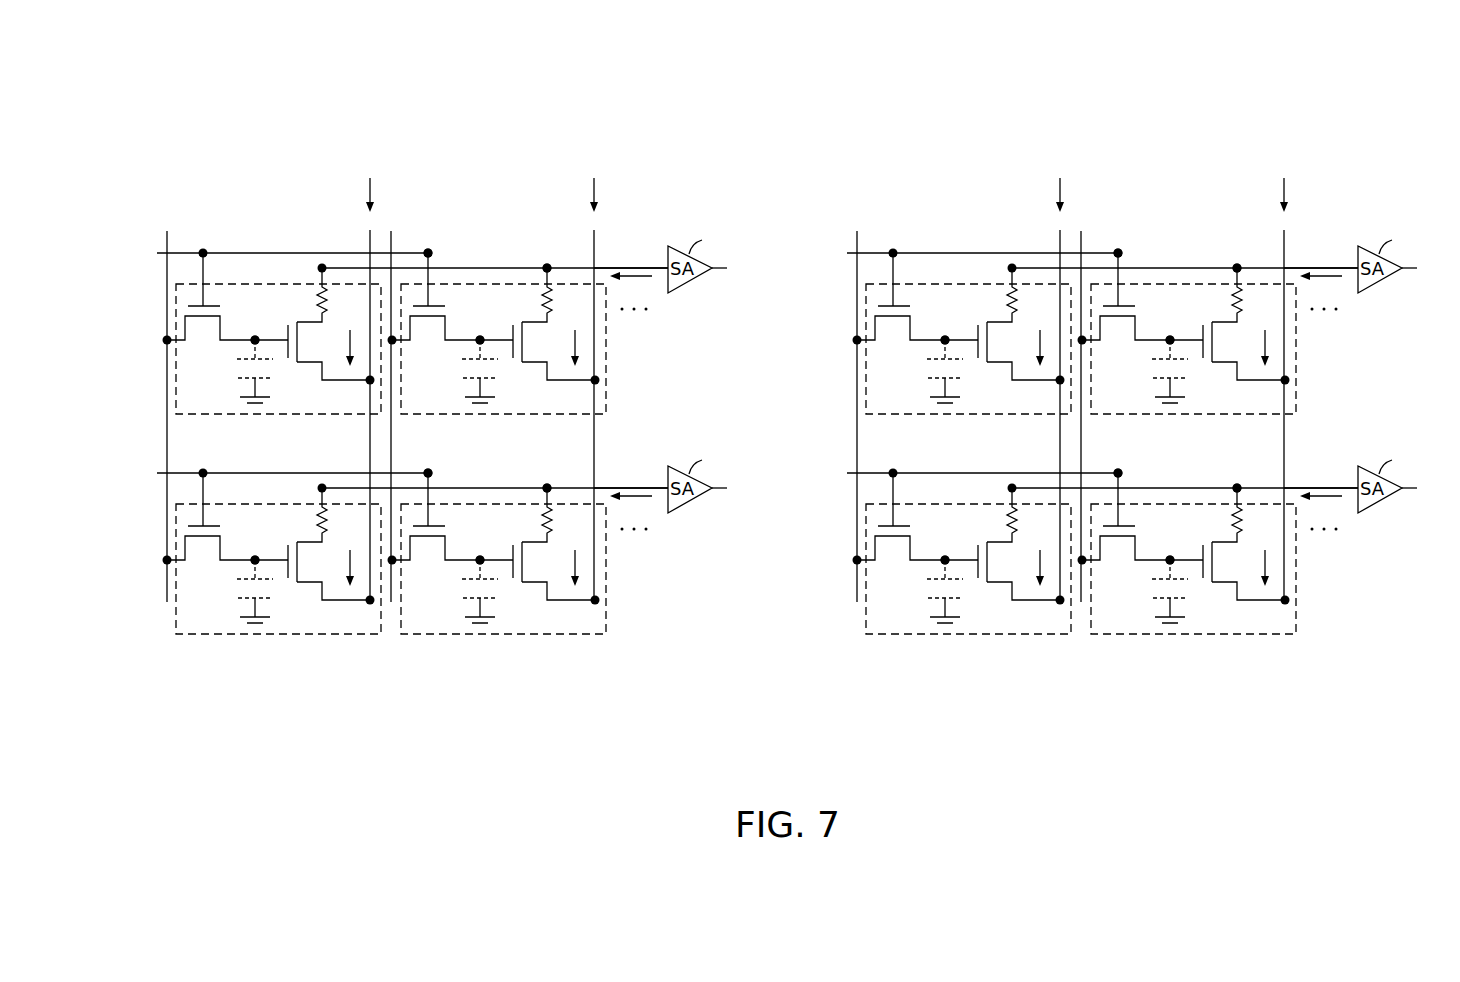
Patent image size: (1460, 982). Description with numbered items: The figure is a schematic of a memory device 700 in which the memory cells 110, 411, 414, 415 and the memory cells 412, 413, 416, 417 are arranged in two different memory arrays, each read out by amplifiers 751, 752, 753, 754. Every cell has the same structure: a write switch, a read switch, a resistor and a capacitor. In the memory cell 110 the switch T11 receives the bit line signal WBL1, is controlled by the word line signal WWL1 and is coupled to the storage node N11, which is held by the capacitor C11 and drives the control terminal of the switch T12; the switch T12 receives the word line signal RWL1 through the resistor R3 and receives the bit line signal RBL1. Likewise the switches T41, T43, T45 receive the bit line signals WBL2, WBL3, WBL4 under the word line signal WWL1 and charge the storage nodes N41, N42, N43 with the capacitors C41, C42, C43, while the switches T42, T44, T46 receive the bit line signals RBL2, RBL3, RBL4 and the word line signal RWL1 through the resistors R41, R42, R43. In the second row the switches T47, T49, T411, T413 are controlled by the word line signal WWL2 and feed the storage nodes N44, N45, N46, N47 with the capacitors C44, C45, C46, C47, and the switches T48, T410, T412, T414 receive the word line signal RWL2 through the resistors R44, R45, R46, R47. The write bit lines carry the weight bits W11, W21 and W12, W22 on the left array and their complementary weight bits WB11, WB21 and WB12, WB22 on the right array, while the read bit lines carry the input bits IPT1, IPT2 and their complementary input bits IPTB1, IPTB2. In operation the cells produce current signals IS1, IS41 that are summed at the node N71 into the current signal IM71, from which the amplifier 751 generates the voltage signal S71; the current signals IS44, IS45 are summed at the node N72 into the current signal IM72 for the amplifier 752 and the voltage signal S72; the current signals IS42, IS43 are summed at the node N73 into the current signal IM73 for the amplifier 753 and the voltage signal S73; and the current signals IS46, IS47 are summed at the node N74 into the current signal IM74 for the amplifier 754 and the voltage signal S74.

The memory device 700 is at (140, 62).
The memory cell 110 is at (278, 363).
The memory cell 411 is at (503, 363).
The memory cell 412 is at (968, 363).
The memory cell 413 is at (1193, 363).
The memory cell 414 is at (278, 583).
The memory cell 415 is at (503, 583).
The memory cell 416 is at (968, 583).
The memory cell 417 is at (1193, 583).
The amplifier 751 is at (704, 258).
The amplifier 752 is at (704, 478).
The amplifier 753 is at (1394, 258).
The amplifier 754 is at (1394, 478).
The bit line signal WBL1 is at (162, 404).
The bit line signal WBL2 is at (411, 404).
The bit line signal WBL3 is at (852, 404).
The bit line signal WBL4 is at (1101, 404).
The bit line signal RBL1 is at (327, 410).
The bit line signal RBL2 is at (551, 410).
The bit line signal RBL3 is at (1017, 410).
The bit line signal RBL4 is at (1241, 410).
The word line signal WWL1 is at (602, 252).
The word line signal WWL2 is at (602, 472).
The word line signal RWL1 is at (976, 252).
The word line signal RWL2 is at (976, 472).
The input bit IPT1 is at (365, 179).
The input bit IPT2 is at (590, 179).
The input bit IPTB1 is at (1060, 179).
The input bit IPTB2 is at (1285, 179).
The node N71 is at (495, 258).
The node N72 is at (495, 478).
The node N73 is at (1185, 258).
The node N74 is at (1185, 478).
The voltage signal S71 is at (740, 267).
The voltage signal S72 is at (740, 487).
The voltage signal S73 is at (1430, 267).
The voltage signal S74 is at (1430, 487).
The current signal IM71 is at (635, 291).
The current signal IM72 is at (635, 511).
The current signal IM73 is at (1325, 291).
The current signal IM74 is at (1325, 511).
The switch T11 is at (226, 306).
The switch T41 is at (451, 306).
The switch T43 is at (916, 306).
The switch T45 is at (1141, 306).
The switch T47 is at (226, 526).
The switch T49 is at (451, 526).
The switch T411 is at (916, 526).
The switch T413 is at (1141, 526).
The switch T12 is at (331, 350).
The switch T42 is at (556, 350).
The switch T44 is at (1021, 350).
The switch T46 is at (1246, 350).
The switch T48 is at (331, 570).
The switch T410 is at (556, 570).
The switch T412 is at (1021, 570).
The switch T414 is at (1246, 570).
The weight bit W11 is at (254, 328).
The weight bit W12 is at (479, 328).
The weight bit W21 is at (254, 548).
The weight bit W22 is at (479, 548).
The weight bit WB11 is at (947, 328).
The weight bit WB12 is at (1172, 328).
The weight bit WB21 is at (947, 548).
The weight bit WB22 is at (1172, 548).
The capacitor C11 is at (226, 371).
The capacitor C41 is at (451, 371).
The capacitor C42 is at (916, 371).
The capacitor C43 is at (1141, 371).
The capacitor C44 is at (226, 591).
The capacitor C45 is at (451, 591).
The capacitor C46 is at (916, 591).
The capacitor C47 is at (1141, 591).
The storage node N11 is at (285, 369).
The storage node N41 is at (510, 369).
The storage node N42 is at (975, 369).
The storage node N43 is at (1200, 369).
The storage node N44 is at (285, 589).
The storage node N45 is at (510, 589).
The storage node N46 is at (975, 589).
The storage node N47 is at (1200, 589).
The resistor R3 is at (306, 291).
The resistor R41 is at (525, 291).
The resistor R42 is at (990, 291).
The resistor R43 is at (1215, 291).
The resistor R44 is at (300, 511).
The resistor R45 is at (525, 511).
The resistor R46 is at (990, 511).
The resistor R47 is at (1215, 511).
The current signal IS1 is at (350, 337).
The current signal IS41 is at (582, 337).
The current signal IS42 is at (1047, 337).
The current signal IS43 is at (1272, 337).
The current signal IS44 is at (357, 557).
The current signal IS45 is at (582, 557).
The current signal IS46 is at (1047, 557).
The current signal IS47 is at (1272, 557).